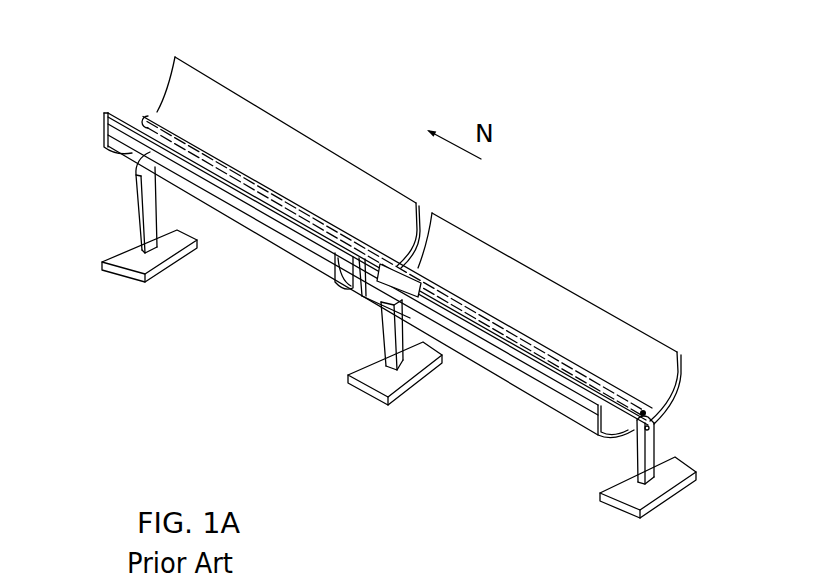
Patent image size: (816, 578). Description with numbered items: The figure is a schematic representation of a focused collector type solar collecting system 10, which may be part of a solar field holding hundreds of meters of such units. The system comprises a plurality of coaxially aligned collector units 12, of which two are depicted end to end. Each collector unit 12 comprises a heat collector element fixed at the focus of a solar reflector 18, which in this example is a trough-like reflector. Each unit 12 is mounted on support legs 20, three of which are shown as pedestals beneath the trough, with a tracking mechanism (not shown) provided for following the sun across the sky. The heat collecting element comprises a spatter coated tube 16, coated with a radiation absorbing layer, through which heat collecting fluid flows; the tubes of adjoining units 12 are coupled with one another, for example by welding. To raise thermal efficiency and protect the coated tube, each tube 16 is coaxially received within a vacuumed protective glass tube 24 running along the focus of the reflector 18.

The solar collecting system 10 is at (478, 430).
The collector unit 12 is at (431, 240).
The spatter coated tube 16 is at (487, 320).
The solar reflector 18 is at (563, 318).
The support legs 20 is at (150, 206).
The protective glass tube 24 is at (459, 298).